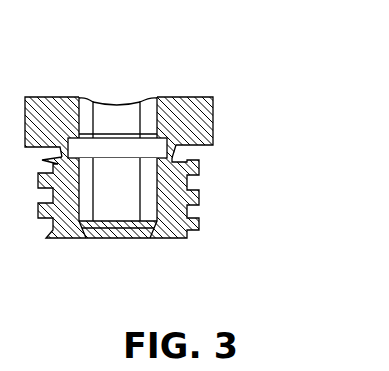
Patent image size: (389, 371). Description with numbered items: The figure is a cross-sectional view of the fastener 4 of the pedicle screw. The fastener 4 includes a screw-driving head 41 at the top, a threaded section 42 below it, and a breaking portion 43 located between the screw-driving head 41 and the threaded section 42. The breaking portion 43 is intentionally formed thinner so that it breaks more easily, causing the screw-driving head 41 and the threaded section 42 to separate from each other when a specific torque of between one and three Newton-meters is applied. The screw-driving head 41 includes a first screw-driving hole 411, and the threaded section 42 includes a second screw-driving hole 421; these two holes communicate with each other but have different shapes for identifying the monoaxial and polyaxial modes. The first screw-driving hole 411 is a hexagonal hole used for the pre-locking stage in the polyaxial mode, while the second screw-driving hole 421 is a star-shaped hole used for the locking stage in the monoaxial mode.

The fastener 4 is at (300, 90).
The screw-driving head 41 is at (207, 118).
The first screw-driving hole 411 is at (117, 118).
The threaded section 42 is at (199, 194).
The second screw-driving hole 421 is at (120, 207).
The breaking portion 43 is at (172, 152).